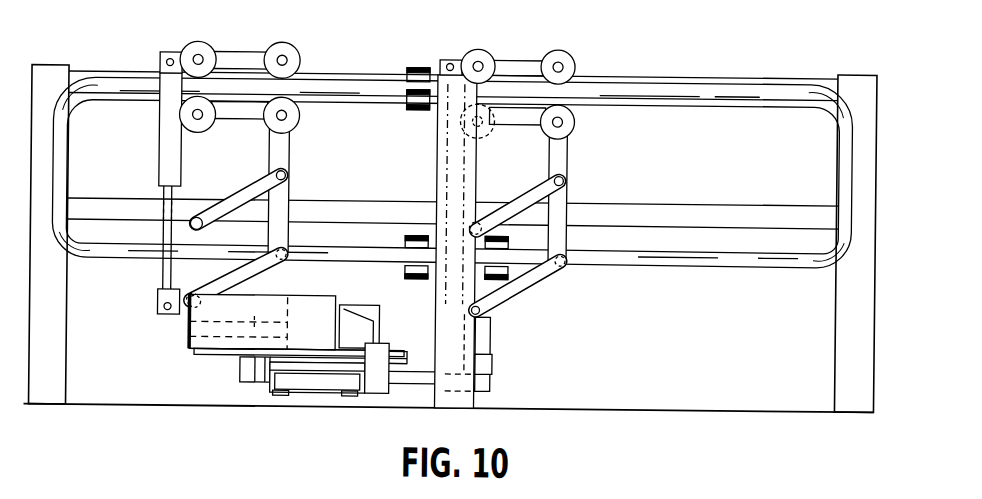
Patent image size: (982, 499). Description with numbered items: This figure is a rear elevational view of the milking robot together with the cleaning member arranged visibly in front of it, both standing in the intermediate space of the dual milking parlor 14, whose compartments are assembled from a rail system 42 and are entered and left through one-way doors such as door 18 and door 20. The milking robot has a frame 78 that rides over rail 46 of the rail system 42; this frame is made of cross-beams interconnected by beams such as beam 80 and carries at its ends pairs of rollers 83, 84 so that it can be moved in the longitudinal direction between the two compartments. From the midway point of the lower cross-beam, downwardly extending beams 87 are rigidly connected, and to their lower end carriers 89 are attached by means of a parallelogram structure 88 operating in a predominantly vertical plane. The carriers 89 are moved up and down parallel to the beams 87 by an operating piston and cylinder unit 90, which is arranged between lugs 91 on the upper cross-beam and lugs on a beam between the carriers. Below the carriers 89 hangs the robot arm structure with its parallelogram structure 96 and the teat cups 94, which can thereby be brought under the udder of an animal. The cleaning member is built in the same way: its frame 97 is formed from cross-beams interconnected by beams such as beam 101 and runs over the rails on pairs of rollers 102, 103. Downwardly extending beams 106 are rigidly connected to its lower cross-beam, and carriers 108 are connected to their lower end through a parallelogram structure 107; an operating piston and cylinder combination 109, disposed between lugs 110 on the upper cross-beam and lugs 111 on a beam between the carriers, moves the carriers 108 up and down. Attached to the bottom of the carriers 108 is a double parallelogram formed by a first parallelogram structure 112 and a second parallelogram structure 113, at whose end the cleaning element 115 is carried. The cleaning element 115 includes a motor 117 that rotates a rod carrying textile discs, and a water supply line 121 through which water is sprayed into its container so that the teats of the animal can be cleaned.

The milking parlor 14 is at (660, 341).
The door 18 is at (105, 168).
The door 20 is at (843, 156).
The rail system 42 is at (453, 239).
The rail 46 is at (453, 150).
The frame 78 is at (629, 3).
The beam 80 is at (518, 54).
The pair of rollers 83 is at (487, 45).
The pair of rollers 84 is at (574, 56).
The downwardly extending beam 87 is at (568, 162).
The parallelogram structure 88 is at (568, 186).
The carrier 89 is at (493, 333).
The operating piston and cylinder unit 90 is at (432, 172).
The lug 91 is at (450, 55).
The teat cups 94 is at (243, 378).
The parallelogram structure 96 is at (427, 376).
The frame 97 is at (413, 160).
The beam 101 is at (243, 50).
The pair of rollers 102 is at (210, 46).
The pair of rollers 103 is at (296, 53).
The downwardly extending beam 106 is at (292, 165).
The parallelogram structure 107 is at (250, 184).
The carrier 108 is at (172, 277).
The operating piston and cylinder combination 109 is at (165, 168).
The lug 110 is at (170, 50).
The lug 111 is at (160, 306).
The first parallelogram structure 112 is at (292, 300).
The second parallelogram structure 113 is at (327, 377).
The cleaning element 115 is at (192, 320).
The motor 117 is at (378, 302).
The water supply line 121 is at (217, 354).